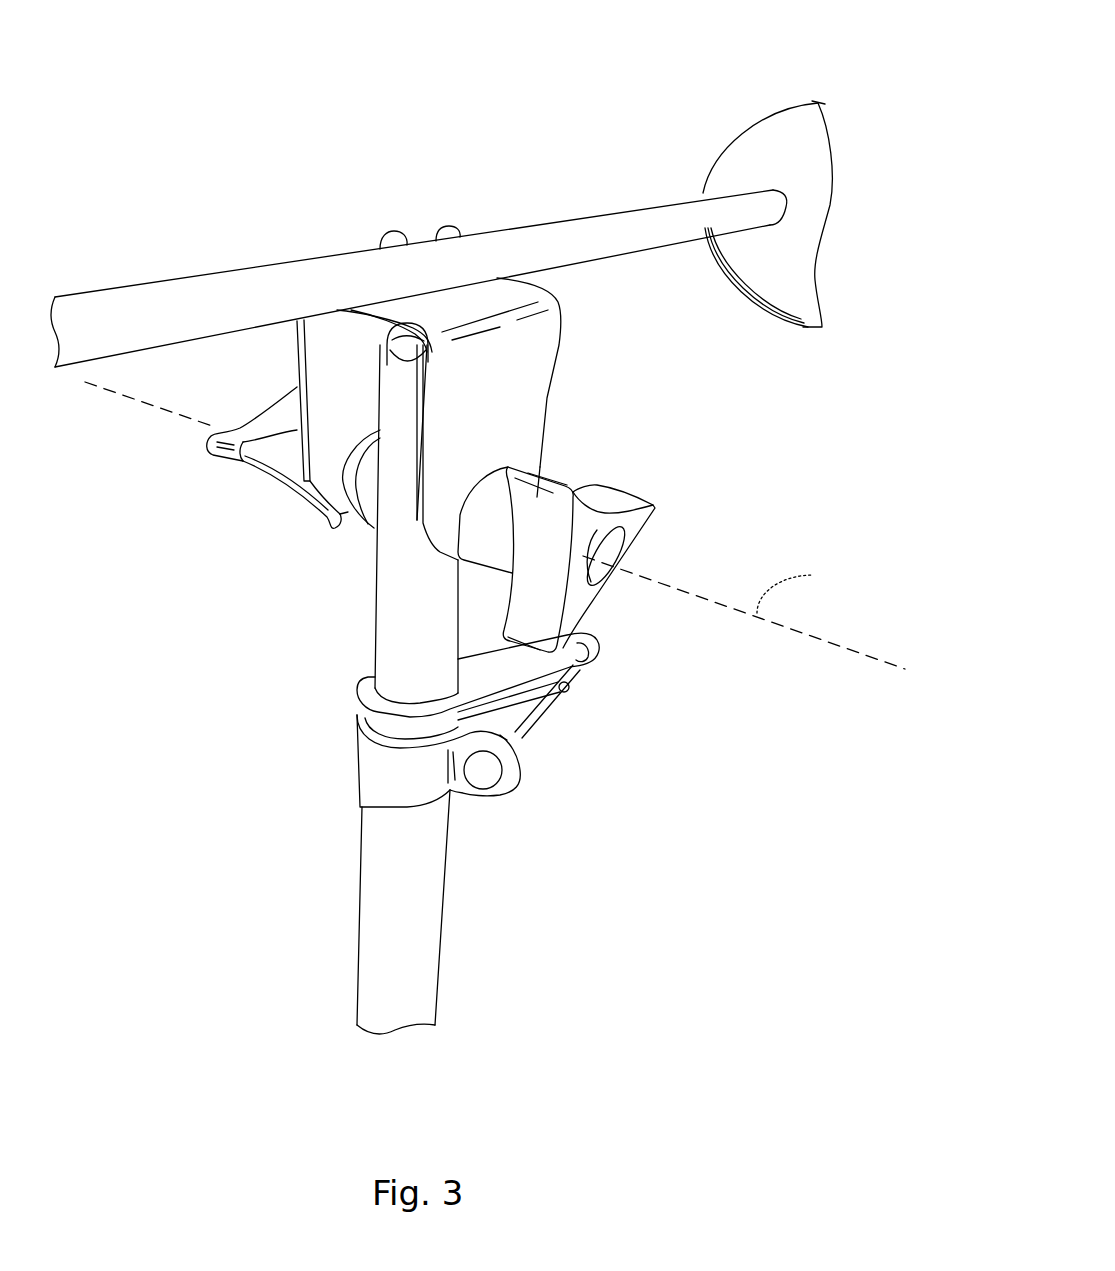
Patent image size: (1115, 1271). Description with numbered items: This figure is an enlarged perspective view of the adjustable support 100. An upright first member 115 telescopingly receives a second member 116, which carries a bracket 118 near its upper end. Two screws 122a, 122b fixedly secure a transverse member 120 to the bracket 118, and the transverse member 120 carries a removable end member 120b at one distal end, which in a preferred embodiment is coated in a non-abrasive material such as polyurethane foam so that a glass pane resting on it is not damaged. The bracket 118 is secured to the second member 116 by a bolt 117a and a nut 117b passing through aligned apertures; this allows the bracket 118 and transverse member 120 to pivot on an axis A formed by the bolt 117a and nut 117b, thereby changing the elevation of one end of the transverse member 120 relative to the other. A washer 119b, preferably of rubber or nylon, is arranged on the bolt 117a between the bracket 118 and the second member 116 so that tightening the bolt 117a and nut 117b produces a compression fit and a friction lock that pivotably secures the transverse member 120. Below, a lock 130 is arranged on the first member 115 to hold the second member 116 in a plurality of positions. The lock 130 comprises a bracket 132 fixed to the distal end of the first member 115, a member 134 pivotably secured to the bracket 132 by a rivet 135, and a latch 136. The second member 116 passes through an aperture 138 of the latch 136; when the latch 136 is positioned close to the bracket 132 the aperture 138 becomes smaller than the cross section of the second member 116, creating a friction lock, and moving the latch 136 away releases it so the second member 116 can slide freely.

The adjustable support 100 is at (165, 140).
The first member 115 is at (443, 926).
The second member 116 is at (373, 592).
The bolt 117a is at (657, 514).
The nut 117b is at (206, 447).
The bracket 118 is at (552, 383).
The washer 119b is at (367, 493).
The transverse member 120 is at (597, 213).
The end member 120b is at (777, 101).
The screw 122a is at (388, 230).
The screw 122b is at (450, 223).
The lock 130 is at (541, 752).
The bracket 132 is at (348, 765).
The member 134 is at (603, 655).
The rivet 135 is at (491, 774).
The latch 136 is at (346, 691).
The aperture 138 is at (367, 683).
The axis A is at (495, 525).